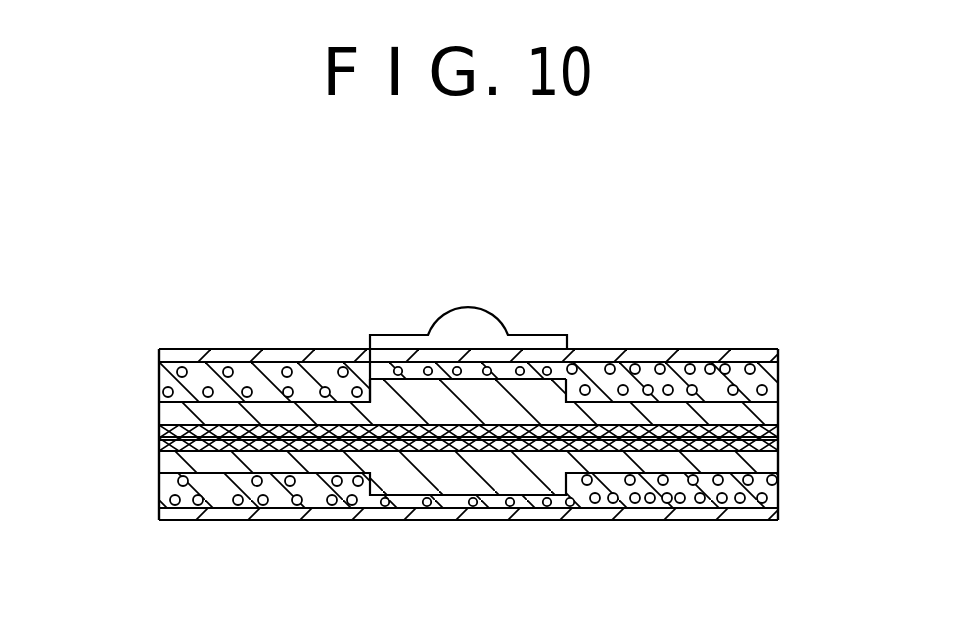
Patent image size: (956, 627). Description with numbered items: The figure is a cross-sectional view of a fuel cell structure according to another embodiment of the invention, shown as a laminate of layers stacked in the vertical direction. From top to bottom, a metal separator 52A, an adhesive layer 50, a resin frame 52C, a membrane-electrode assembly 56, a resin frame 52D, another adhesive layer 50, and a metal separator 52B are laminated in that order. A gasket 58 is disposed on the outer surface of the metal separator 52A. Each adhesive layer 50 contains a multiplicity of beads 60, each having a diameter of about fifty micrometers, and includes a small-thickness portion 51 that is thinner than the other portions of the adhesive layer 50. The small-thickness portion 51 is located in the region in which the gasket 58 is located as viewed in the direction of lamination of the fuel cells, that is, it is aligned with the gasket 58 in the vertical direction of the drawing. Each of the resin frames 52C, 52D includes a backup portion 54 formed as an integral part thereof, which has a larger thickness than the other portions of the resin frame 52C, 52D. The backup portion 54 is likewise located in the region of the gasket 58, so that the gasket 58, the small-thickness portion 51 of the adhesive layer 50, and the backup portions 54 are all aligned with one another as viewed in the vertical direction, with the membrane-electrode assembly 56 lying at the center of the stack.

The adhesive layer 50 is at (778, 375).
The small-thickness portion 51 is at (567, 349).
The metal separator 52A is at (201, 362).
The metal separator 52B is at (735, 514).
The resin frame 52C is at (167, 413).
The resin frame 52D is at (167, 460).
The backup portion 54 is at (373, 362).
The membrane-electrode assembly 56 is at (805, 436).
The gasket 58 is at (468, 320).
The beads 60 is at (724, 366).